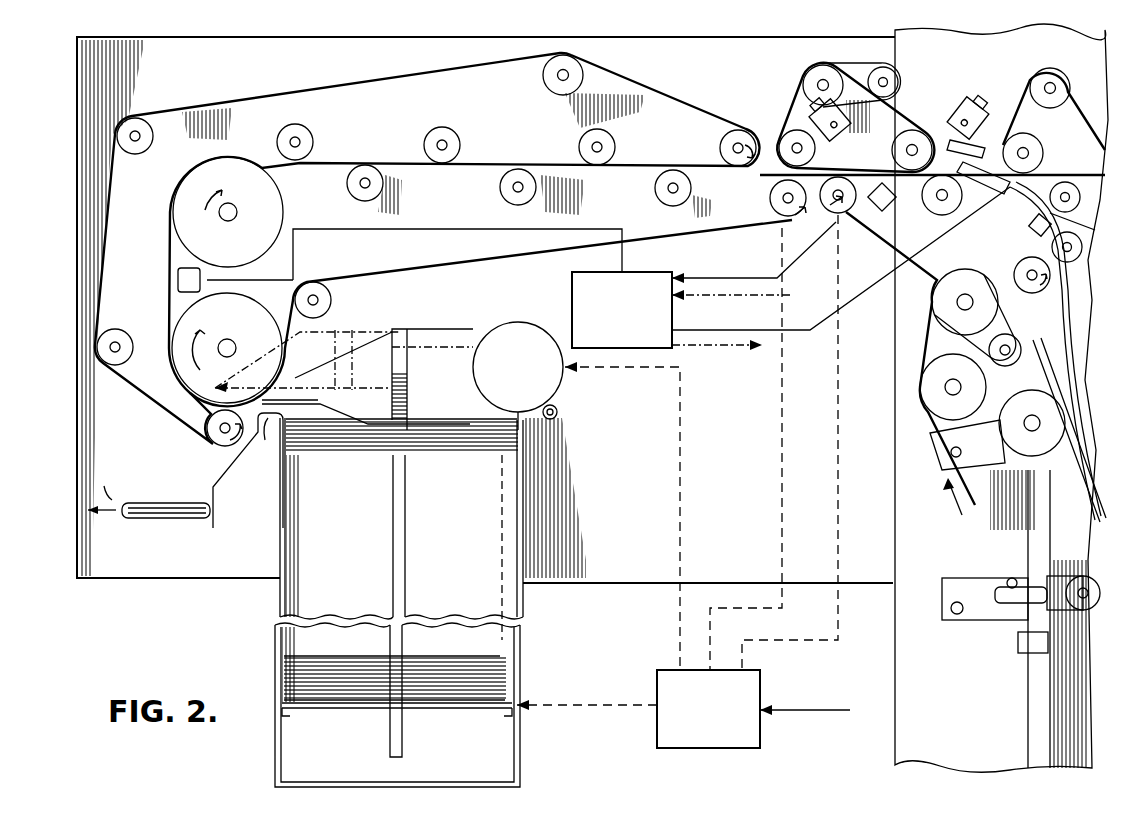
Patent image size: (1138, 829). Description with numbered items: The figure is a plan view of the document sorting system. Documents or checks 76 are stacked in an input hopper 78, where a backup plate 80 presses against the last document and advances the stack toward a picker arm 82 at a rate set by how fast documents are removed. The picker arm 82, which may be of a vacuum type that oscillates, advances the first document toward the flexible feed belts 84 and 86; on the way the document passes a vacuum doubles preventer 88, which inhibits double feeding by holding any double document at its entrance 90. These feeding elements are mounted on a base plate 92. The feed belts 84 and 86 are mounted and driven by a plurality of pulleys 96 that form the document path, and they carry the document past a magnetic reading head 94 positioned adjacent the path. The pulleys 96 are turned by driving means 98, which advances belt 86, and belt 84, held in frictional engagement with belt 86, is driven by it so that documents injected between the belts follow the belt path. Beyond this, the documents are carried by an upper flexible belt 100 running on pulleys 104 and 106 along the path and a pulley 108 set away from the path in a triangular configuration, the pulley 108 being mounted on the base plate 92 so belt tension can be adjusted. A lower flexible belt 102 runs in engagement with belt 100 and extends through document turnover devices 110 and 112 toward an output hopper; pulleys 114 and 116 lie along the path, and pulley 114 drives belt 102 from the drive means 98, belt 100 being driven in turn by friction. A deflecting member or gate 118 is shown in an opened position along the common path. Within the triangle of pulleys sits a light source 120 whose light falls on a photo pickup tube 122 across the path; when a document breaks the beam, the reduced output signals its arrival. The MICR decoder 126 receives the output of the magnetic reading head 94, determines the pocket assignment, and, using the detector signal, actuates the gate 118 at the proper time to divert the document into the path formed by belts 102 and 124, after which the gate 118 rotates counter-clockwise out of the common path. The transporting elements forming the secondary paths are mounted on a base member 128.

The documents or checks 76 is at (166, 300).
The input hopper 78 is at (300, 598).
The backup plate 80 is at (432, 704).
The picker arm 82 is at (434, 340).
The feed belt 84 is at (388, 80).
The feed belt 86 is at (412, 170).
The vacuum doubles preventer 88 is at (226, 488).
The entrance 90 is at (266, 430).
The base plate 92 is at (78, 80).
The magnetic reading head 94 is at (178, 276).
The pulleys 96 is at (133, 156).
The driving means 98 is at (708, 748).
The upper flexible belt 100 is at (893, 104).
The lower flexible belt 102 is at (895, 244).
The pulley 104 is at (782, 138).
The pulley 106 is at (893, 146).
The pulley 108 is at (823, 63).
The document turnover device 110 is at (1044, 380).
The document turnover device 112 is at (1077, 470).
The pulley 114 is at (845, 215).
The pulley 116 is at (942, 216).
The deflecting member or gate 118 is at (981, 205).
The light source 120 is at (808, 104).
The photo pickup tube 122 is at (885, 208).
The belt 124 is at (1060, 300).
The MICR decoder 126 is at (572, 300).
The base member 128 is at (893, 745).